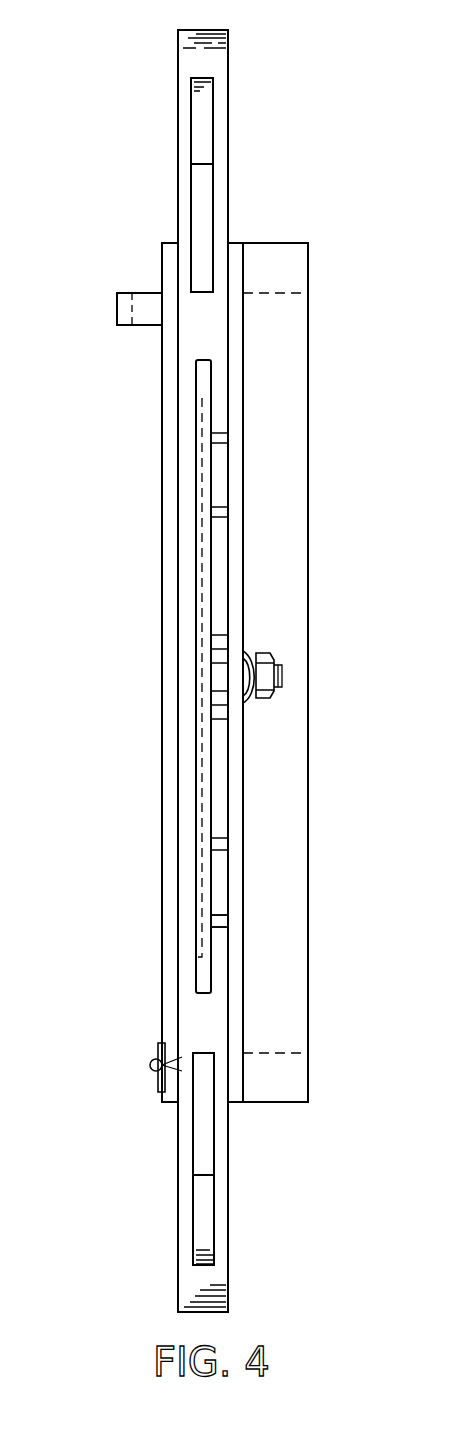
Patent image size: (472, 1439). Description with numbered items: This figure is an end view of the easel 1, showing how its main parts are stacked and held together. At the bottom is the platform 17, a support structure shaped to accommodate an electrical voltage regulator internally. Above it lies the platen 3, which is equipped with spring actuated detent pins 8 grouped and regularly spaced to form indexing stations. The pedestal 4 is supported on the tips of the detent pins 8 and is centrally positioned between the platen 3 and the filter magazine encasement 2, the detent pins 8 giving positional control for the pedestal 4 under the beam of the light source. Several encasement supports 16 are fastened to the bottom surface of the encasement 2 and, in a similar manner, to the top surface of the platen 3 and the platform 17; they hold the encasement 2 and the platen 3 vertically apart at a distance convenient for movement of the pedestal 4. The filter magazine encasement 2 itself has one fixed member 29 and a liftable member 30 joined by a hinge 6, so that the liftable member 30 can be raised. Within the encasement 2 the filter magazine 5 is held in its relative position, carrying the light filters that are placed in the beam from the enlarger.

The clamping assembly 1 is at (140, 77).
The filter magazine encasement 2 is at (162, 487).
The platen 3 is at (232, 1104).
The pedestal 4 is at (212, 372).
The filter magazine 5 is at (348, 677).
The hinge 6 is at (150, 1062).
The spring actuated detent pin 8 is at (220, 930).
The encasement support 16 is at (228, 48).
The platform 17 is at (304, 1103).
The fixed member 29 is at (166, 1103).
The liftable member 30 is at (162, 268).